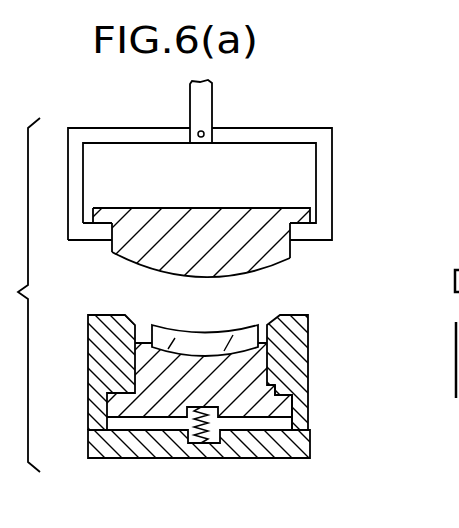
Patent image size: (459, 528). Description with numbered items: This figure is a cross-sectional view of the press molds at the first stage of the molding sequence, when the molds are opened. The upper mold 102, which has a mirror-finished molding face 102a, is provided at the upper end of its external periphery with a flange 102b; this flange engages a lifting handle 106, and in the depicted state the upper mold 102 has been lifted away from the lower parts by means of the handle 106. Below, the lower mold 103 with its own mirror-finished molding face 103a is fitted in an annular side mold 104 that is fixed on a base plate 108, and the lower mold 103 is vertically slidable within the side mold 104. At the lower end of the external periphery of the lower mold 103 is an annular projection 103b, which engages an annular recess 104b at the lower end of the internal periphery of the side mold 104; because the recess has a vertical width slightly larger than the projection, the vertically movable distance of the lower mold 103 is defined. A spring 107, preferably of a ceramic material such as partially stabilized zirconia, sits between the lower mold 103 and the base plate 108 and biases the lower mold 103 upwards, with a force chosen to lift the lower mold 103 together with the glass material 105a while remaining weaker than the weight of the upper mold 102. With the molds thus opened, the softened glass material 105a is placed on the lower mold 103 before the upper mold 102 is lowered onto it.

The upper mold 102 is at (284, 256).
The mirror-finished molding face 102a is at (263, 268).
The flange 102b is at (299, 207).
The lower mold 103 is at (148, 380).
The mirror-finished molding face 103a is at (152, 337).
The annular projection 103b is at (292, 410).
The annular side mold 104 is at (330, 336).
The annular recess 104b is at (330, 398).
The glass material 105a is at (209, 344).
The lifting handle 106 is at (333, 196).
The spring 107 is at (203, 443).
The base plate 108 is at (145, 453).